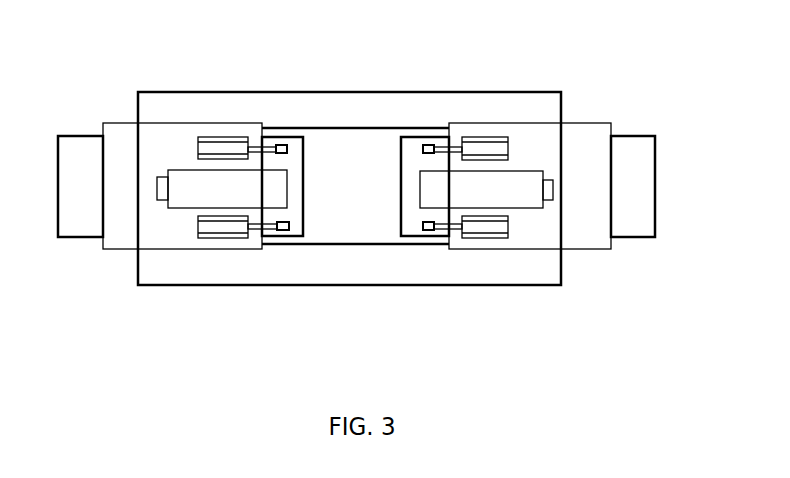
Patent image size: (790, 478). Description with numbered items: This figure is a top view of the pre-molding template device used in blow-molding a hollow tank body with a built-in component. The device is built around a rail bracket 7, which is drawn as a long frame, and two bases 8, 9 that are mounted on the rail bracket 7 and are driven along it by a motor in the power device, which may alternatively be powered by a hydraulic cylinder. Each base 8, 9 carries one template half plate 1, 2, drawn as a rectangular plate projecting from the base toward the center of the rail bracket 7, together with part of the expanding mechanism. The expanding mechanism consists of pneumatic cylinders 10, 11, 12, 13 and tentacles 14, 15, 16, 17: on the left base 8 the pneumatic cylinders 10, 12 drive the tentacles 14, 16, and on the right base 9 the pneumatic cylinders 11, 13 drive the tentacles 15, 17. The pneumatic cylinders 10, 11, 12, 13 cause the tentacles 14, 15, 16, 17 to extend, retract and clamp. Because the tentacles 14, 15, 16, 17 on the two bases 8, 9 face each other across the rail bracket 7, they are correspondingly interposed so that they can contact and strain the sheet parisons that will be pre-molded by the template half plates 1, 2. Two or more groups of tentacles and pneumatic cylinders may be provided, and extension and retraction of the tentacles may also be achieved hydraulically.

The template half plate 1 is at (176, 198).
The template half plate 2 is at (530, 191).
The rail bracket 7 is at (360, 105).
The base 8 is at (150, 143).
The base 9 is at (580, 146).
The pneumatic cylinder 10 is at (241, 228).
The pneumatic cylinder 11 is at (497, 228).
The pneumatic cylinder 12 is at (220, 145).
The pneumatic cylinder 13 is at (500, 146).
The tentacle 14 is at (288, 229).
The tentacle 15 is at (431, 229).
The tentacle 16 is at (278, 143).
The tentacle 17 is at (429, 147).